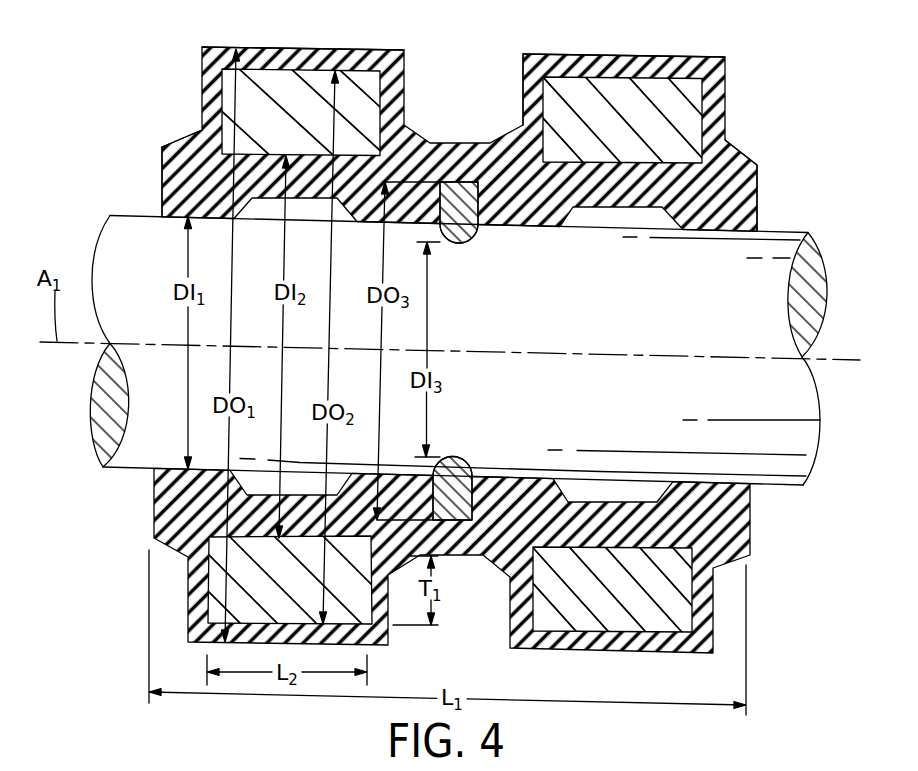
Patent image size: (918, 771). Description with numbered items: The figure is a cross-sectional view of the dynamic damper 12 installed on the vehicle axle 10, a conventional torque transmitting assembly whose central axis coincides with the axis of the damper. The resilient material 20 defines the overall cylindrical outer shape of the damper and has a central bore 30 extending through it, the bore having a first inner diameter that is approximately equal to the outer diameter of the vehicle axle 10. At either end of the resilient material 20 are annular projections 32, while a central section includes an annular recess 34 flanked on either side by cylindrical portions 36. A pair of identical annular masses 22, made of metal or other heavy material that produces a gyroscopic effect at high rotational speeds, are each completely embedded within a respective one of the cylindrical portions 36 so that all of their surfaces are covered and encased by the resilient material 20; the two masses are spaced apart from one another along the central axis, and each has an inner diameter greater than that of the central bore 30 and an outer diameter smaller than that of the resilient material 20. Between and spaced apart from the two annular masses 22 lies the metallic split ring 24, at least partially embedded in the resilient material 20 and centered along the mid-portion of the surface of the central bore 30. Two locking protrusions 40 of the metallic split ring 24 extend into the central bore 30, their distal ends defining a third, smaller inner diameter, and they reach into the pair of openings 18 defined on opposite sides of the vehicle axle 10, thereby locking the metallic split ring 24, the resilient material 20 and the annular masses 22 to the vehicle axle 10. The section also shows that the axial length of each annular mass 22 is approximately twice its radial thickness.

The vehicle axle 10 is at (130, 216).
The dynamic damper 12 is at (263, 45).
The openings 18 is at (473, 232).
The resilient material 20 is at (572, 54).
The annular masses 22 is at (297, 100).
The metallic split ring 24 is at (462, 195).
The central bore 30 is at (707, 239).
The annular projections 32 is at (175, 143).
The annular recess 34 is at (523, 78).
The cylindrical portions 36 is at (371, 47).
The locking protrusions 40 is at (460, 244).